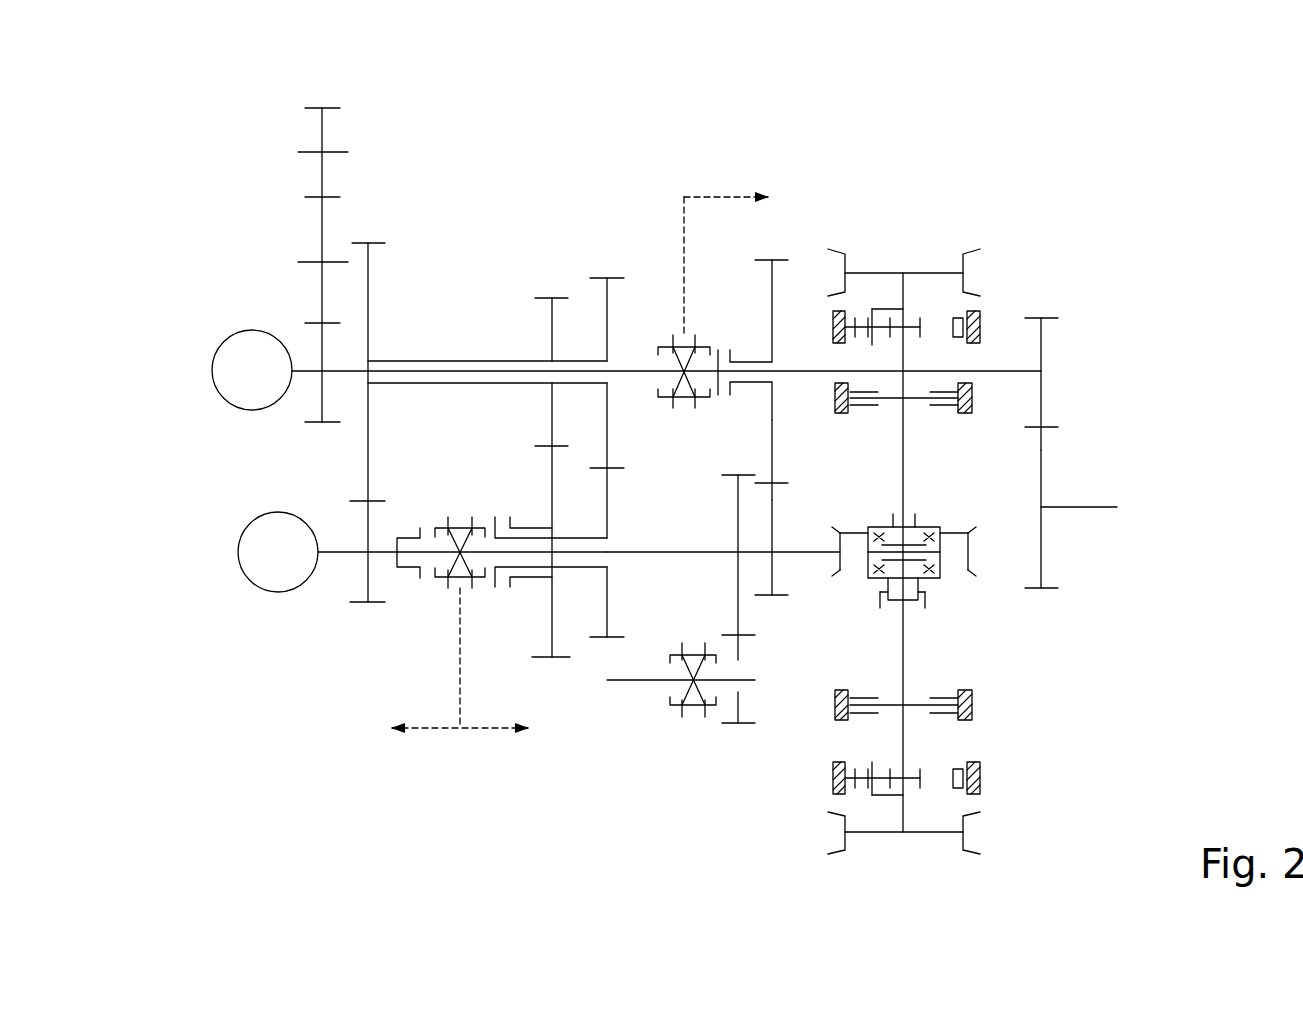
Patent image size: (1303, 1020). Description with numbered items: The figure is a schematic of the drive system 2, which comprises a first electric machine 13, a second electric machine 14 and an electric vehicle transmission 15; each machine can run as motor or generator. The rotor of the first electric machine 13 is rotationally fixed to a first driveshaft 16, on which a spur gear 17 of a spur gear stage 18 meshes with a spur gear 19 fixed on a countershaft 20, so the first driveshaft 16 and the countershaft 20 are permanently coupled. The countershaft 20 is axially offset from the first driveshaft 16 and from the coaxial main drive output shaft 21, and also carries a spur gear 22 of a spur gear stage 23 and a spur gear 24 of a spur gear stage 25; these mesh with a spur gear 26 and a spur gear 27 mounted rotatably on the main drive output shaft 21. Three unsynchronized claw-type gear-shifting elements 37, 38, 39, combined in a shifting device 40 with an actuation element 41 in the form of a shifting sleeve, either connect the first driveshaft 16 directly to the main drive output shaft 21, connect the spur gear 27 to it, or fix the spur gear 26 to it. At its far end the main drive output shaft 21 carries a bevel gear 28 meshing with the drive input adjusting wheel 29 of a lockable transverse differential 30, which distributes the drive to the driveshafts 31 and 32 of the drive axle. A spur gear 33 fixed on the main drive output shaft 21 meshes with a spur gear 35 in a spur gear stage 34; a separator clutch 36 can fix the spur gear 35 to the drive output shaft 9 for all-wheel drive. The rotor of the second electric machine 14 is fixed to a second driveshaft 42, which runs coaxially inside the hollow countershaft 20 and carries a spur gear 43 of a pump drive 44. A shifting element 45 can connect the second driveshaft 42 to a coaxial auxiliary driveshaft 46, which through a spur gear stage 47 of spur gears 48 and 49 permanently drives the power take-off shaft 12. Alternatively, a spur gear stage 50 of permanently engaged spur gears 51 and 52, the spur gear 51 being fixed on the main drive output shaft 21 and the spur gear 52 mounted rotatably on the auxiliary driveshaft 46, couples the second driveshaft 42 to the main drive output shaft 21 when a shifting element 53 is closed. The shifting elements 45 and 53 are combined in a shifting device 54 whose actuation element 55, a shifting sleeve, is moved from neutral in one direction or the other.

The drive system 2 is at (197, 170).
The drive output shaft 9 is at (622, 685).
The power take-off shaft 12 is at (1092, 507).
The first electric machine 13 is at (262, 575).
The second electric machine 14 is at (232, 362).
The electric vehicle transmission 15 is at (640, 145).
The first driveshaft 16 is at (337, 553).
The spur gear 17 is at (363, 575).
The spur gear stage 18 is at (345, 500).
The spur gear 19 is at (368, 290).
The countershaft 20 is at (437, 361).
The main drive output shaft 21 is at (630, 553).
The spur gear 22 is at (545, 302).
The spur gear stage 23 is at (530, 446).
The spur gear 24 is at (600, 310).
The spur gear stage 25 is at (617, 462).
The spur gear 26 is at (552, 483).
The spur gear 27 is at (608, 500).
The bevel gear 28 is at (842, 572).
The drive input adjusting wheel 29 is at (970, 534).
The transverse differential 30 is at (943, 590).
The driveshaft 31 is at (905, 462).
The driveshaft 32 is at (900, 652).
The spur gear 33 is at (738, 492).
The spur gear stage 34 is at (756, 642).
The spur gear 35 is at (740, 727).
The separator clutch 36 is at (678, 712).
The gear-shifting element 37 is at (428, 530).
The gear-shifting element 38 is at (487, 578).
The gear-shifting element 39 is at (503, 582).
The shifting device 40 is at (435, 592).
The actuation element 41 is at (440, 533).
The second driveshaft 42 is at (300, 355).
The spur gear 43 is at (317, 338).
The pump drive 44 is at (356, 122).
The shifting element 45 is at (713, 347).
The auxiliary driveshaft 46 is at (1005, 370).
The spur gear stage 47 is at (1062, 428).
The spur gear 48 is at (1042, 343).
The spur gear 49 is at (1042, 548).
The spur gear stage 50 is at (797, 482).
The spur gear 51 is at (773, 525).
The spur gear 52 is at (773, 315).
The shifting element 53 is at (728, 350).
The shifting device 54 is at (672, 322).
The actuation element 55 is at (650, 345).